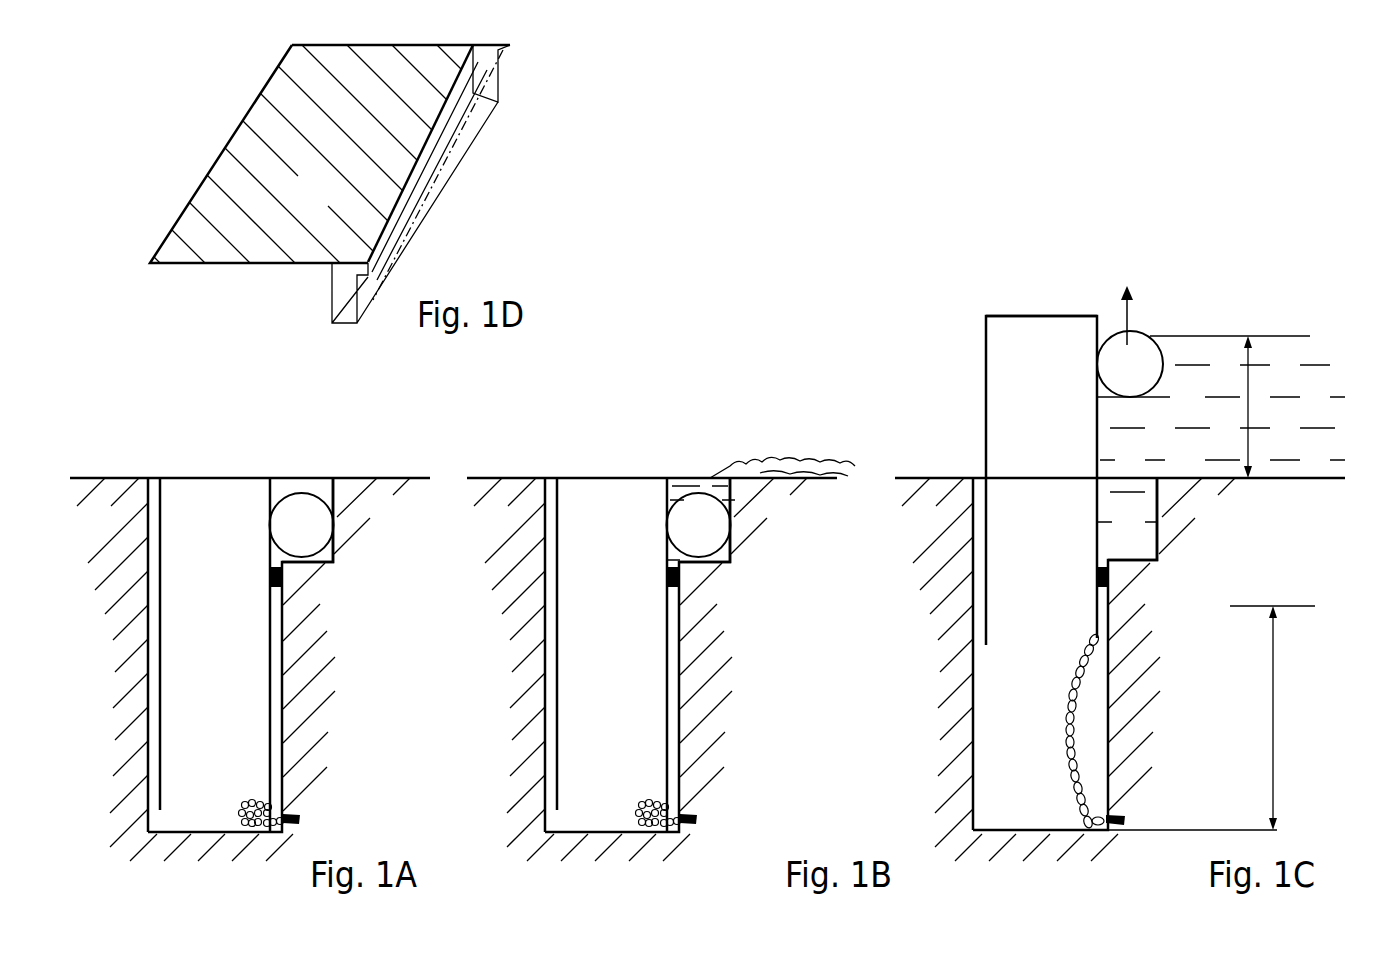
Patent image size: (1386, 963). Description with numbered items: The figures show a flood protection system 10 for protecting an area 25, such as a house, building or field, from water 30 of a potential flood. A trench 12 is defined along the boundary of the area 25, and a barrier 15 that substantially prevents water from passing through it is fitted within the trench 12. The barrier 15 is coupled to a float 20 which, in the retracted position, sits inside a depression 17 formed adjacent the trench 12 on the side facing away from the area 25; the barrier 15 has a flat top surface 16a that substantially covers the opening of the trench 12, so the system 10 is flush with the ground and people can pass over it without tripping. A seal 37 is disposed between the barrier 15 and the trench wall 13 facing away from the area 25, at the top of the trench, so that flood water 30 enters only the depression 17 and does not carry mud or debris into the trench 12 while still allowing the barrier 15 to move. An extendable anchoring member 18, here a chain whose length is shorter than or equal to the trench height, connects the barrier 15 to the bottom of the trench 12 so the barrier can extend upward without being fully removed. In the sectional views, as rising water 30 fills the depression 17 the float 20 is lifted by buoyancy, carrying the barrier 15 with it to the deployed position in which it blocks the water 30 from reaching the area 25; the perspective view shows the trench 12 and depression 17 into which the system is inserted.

In FIG. 1A, the flood protection system 10 is at (233, 390).
In FIG. 1C, the flood protection system 10 is at (963, 330).
In FIG. 1A, the trench 12 is at (155, 478).
In FIG. 1B, the trench 12 is at (524, 628).
In FIG. 1C, the trench 12 is at (981, 478).
In FIG. 1D, the trench 12 is at (421, 184).
In FIG. 1A, the trench wall 13 is at (283, 703).
In FIG. 1B, the trench wall 13 is at (659, 655).
In FIG. 1C, the trench wall 13 is at (1065, 654).
In FIG. 1A, the barrier 15 is at (230, 474).
In FIG. 1B, the barrier 15 is at (612, 624).
In FIG. 1C, the barrier 15 is at (1050, 346).
In FIG. 1A, the flat top surface 16a is at (218, 480).
In FIG. 1B, the flat top surface 16a is at (612, 506).
In FIG. 1C, the flat top surface 16a is at (1030, 316).
In FIG. 1A, the depression 17 is at (320, 488).
In FIG. 1B, the depression 17 is at (716, 472).
In FIG. 1C, the depression 17 is at (1143, 488).
In FIG. 1D, the depression 17 is at (447, 170).
In FIG. 1A, the anchoring member 18 is at (300, 825).
In FIG. 1B, the anchoring member 18 is at (702, 814).
In FIG. 1C, the anchoring member 18 is at (1072, 743).
In FIG. 1A, the float 20 is at (313, 539).
In FIG. 1B, the float 20 is at (699, 525).
In FIG. 1C, the float 20 is at (1141, 378).
In FIG. 1A, the area 25 is at (103, 478).
In FIG. 1B, the area 25 is at (639, 649).
In FIG. 1C, the area 25 is at (928, 478).
In FIG. 1D, the area 25 is at (323, 205).
In FIG. 1B, the water 30 is at (782, 445).
In FIG. 1C, the water 30 is at (1320, 425).
In FIG. 1A, the seal 37 is at (287, 573).
In FIG. 1B, the seal 37 is at (638, 592).
In FIG. 1C, the seal 37 is at (1096, 578).